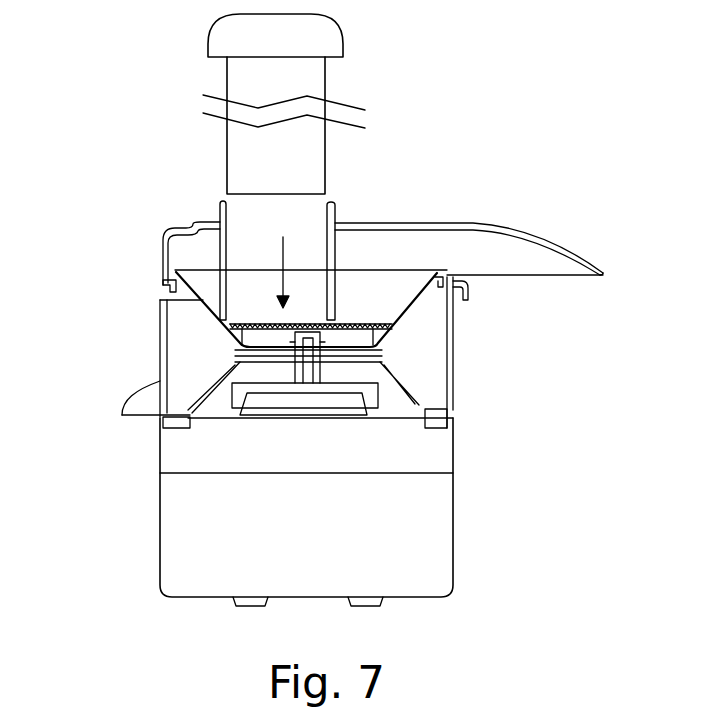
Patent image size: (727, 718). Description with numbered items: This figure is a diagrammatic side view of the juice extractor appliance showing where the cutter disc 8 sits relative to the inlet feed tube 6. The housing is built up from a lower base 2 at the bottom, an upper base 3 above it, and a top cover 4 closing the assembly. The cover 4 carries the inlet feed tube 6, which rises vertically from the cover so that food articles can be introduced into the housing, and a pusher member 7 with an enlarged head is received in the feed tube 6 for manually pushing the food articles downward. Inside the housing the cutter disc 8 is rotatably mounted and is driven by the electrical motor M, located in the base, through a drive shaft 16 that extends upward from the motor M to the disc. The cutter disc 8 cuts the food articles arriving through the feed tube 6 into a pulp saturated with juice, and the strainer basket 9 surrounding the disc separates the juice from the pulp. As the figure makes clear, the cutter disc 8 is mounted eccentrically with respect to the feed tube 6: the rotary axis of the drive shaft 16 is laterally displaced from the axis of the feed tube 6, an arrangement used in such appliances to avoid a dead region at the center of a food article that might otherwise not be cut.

The lower base 2 is at (450, 547).
The upper base 3 is at (448, 357).
The top cover 4 is at (475, 228).
The inlet feed tube 6 is at (318, 156).
The pusher member 7 is at (322, 37).
The cutter disc 8 is at (247, 333).
The strainer basket 9 is at (207, 313).
The drive shaft 16 is at (310, 364).
The electrical motor M is at (338, 405).